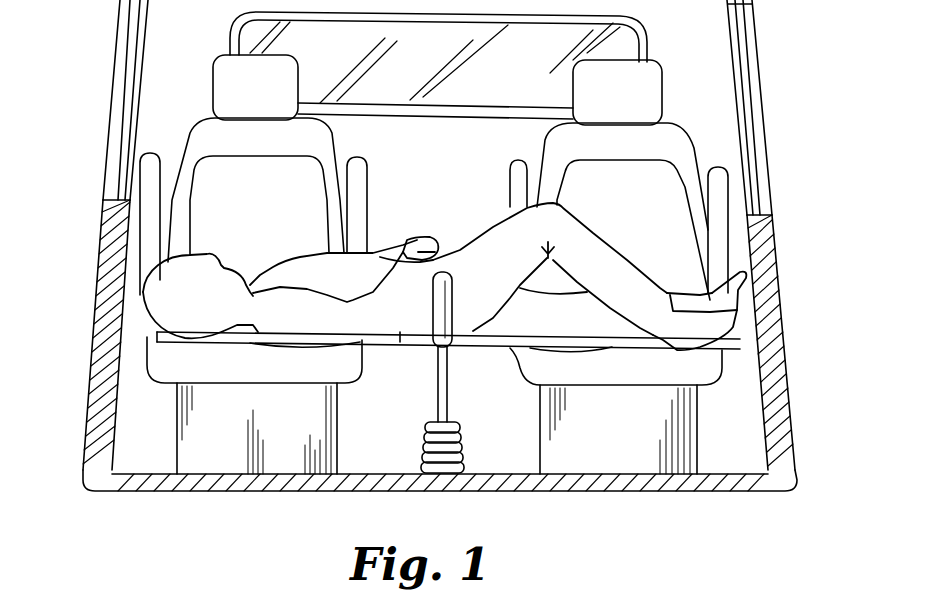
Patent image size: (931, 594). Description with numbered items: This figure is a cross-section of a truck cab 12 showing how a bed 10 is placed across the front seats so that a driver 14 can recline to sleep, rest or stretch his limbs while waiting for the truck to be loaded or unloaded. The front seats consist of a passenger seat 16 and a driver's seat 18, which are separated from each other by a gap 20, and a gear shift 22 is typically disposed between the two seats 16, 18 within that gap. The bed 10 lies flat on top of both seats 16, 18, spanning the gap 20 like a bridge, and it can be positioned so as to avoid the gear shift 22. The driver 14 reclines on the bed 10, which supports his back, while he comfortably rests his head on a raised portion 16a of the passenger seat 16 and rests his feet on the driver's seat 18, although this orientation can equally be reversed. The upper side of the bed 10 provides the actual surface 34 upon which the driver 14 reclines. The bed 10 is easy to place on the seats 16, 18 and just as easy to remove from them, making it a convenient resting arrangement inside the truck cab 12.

The bed 10 is at (479, 338).
The truck cab 12 is at (786, 367).
The driver 14 is at (276, 267).
The passenger seat 16 is at (246, 383).
The raised portion of the passenger seat 16a is at (157, 334).
The driver's seat 18 is at (637, 385).
The gap 20 is at (503, 443).
The gear shift 22 is at (452, 285).
The surface 34 is at (405, 325).